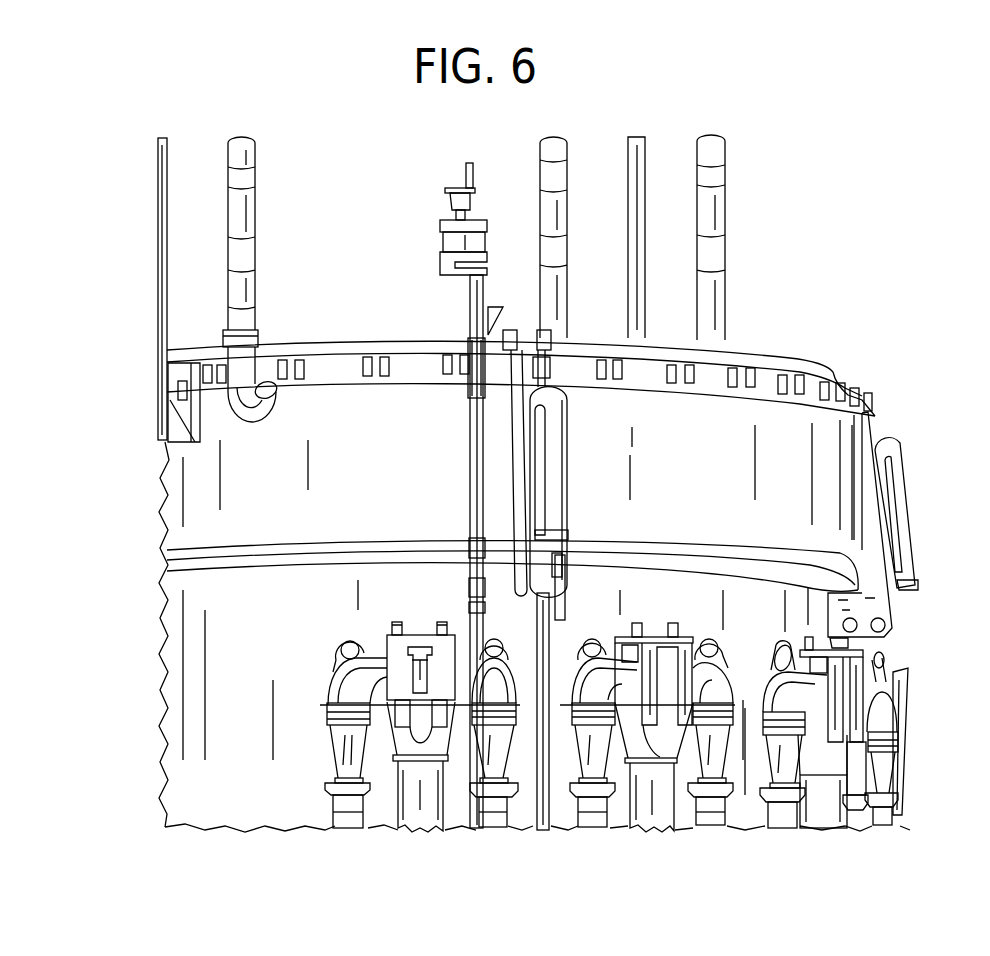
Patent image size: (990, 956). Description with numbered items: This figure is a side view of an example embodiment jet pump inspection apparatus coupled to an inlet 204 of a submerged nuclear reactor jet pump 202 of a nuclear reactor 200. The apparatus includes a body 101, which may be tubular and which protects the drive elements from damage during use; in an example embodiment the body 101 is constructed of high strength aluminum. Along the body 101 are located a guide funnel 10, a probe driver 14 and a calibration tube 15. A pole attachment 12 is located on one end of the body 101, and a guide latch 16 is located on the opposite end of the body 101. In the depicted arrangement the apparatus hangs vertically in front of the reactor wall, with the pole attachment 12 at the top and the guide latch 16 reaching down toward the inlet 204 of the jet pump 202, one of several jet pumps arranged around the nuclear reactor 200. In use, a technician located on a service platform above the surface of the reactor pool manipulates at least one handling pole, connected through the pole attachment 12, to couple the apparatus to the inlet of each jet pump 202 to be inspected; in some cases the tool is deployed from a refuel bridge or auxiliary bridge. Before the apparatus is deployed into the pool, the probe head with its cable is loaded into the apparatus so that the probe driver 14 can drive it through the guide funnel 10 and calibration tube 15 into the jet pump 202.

The guide funnel 10 is at (505, 301).
The pole attachment 12 is at (450, 185).
The probe driver 14 is at (494, 238).
The calibration tube 15 is at (458, 586).
The guide latch 16 is at (506, 712).
The body 101 is at (443, 456).
The nuclear reactor 200 is at (815, 262).
The jet pump 202 is at (343, 687).
The inlet 204 is at (508, 772).